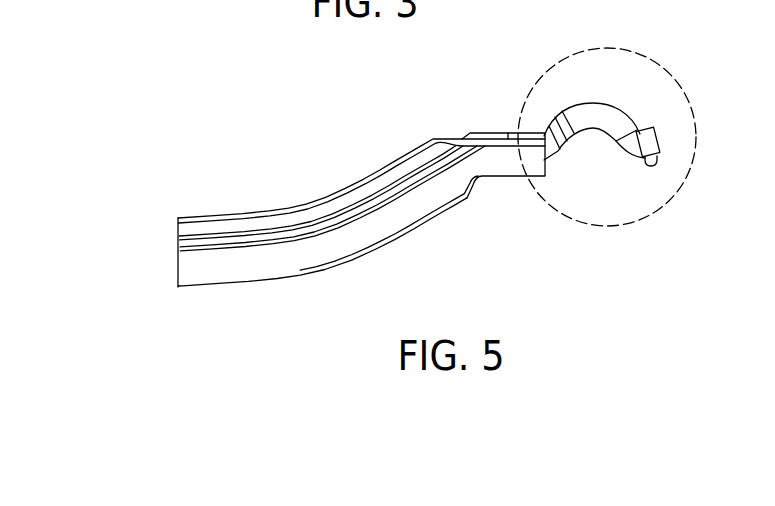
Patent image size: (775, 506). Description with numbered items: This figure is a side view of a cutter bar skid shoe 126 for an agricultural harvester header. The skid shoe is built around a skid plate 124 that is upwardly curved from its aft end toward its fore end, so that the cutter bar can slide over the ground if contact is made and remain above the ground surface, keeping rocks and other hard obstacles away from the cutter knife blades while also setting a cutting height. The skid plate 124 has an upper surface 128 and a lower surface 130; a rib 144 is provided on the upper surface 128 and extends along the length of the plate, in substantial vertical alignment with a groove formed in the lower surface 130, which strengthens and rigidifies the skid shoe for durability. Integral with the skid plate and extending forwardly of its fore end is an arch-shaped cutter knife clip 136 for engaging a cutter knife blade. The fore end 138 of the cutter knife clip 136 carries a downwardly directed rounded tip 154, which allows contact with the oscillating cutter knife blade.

The skid plate 124 is at (397, 254).
The cutter bar skid shoe 126 is at (442, 178).
The upper surface 128 is at (232, 227).
The lower surface 130 is at (268, 286).
The cutter knife clip 136 is at (603, 97).
The fore end of the cutter knife clip 138 is at (650, 128).
The rib 144 is at (310, 203).
The rounded tip 154 is at (652, 167).